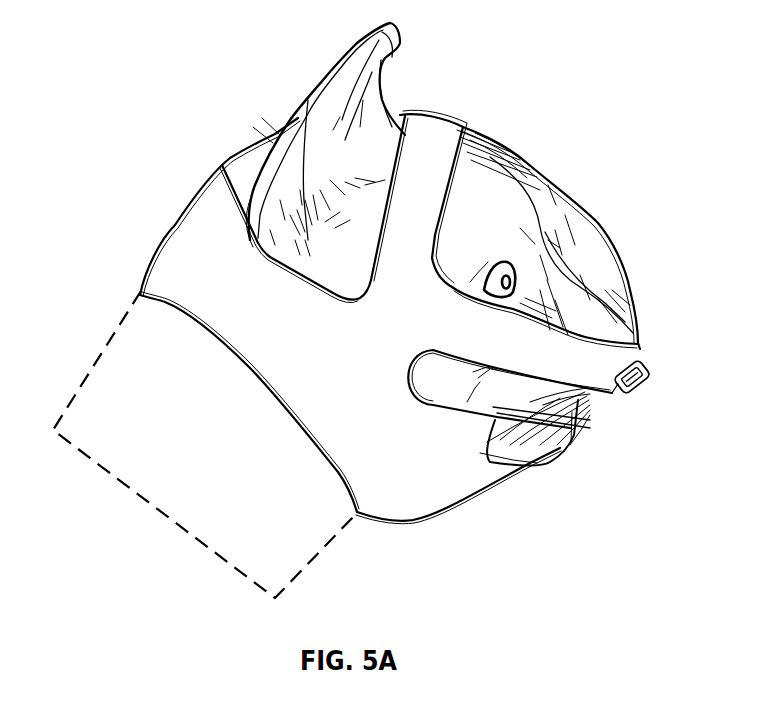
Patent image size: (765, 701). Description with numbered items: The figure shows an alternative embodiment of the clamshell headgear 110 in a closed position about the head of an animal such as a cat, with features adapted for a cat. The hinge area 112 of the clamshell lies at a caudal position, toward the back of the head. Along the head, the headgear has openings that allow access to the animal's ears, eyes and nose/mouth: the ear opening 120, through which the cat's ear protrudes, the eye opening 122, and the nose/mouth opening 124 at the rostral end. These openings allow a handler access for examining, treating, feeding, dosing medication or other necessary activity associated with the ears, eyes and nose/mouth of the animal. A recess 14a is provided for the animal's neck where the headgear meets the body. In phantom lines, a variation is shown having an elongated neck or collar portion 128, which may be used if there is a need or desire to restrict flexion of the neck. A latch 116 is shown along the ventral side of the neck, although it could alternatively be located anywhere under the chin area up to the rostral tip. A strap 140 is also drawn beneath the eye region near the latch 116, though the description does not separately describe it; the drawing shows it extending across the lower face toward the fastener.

The headgear 110 is at (204, 114).
The hinge area 112 is at (166, 232).
The ear opening 120 is at (396, 146).
The eye opening 122 is at (460, 170).
The second strap 140 is at (640, 344).
The latch 116 is at (652, 384).
The nose/mouth opening 124 is at (585, 440).
The recess 14a is at (248, 365).
The elongated neck or collar portion 128 is at (103, 327).